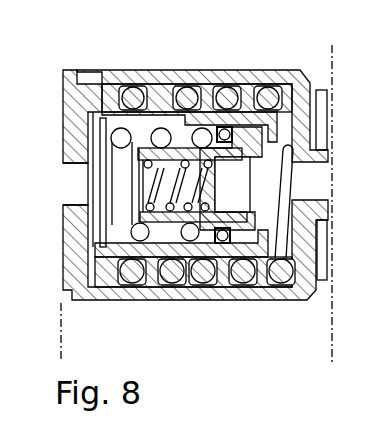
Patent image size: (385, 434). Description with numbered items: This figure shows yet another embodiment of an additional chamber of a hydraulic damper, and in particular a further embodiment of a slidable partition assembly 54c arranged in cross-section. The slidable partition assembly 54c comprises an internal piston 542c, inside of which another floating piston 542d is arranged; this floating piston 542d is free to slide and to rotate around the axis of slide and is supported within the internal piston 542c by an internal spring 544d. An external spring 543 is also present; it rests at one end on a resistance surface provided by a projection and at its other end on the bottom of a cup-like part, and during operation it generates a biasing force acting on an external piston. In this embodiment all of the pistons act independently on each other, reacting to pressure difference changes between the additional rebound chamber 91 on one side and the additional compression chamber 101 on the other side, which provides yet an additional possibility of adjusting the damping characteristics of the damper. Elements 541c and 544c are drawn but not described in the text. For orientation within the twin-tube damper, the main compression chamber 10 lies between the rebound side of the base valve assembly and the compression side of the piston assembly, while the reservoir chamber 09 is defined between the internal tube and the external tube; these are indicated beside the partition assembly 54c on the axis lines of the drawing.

The left housing block 541c is at (110, 110).
The plunger ball 544c is at (163, 136).
The internal spring 544d is at (182, 157).
The floating piston 542d is at (285, 83).
The internal piston 542c is at (180, 300).
The slidable partition assembly 54c is at (223, 275).
The external spring 543 is at (242, 277).
The main compression chamber 10 is at (47, 332).
The additional compression chamber 101 is at (82, 261).
The additional rebound chamber 91 is at (317, 289).
The reservoir chamber 09 is at (343, 203).